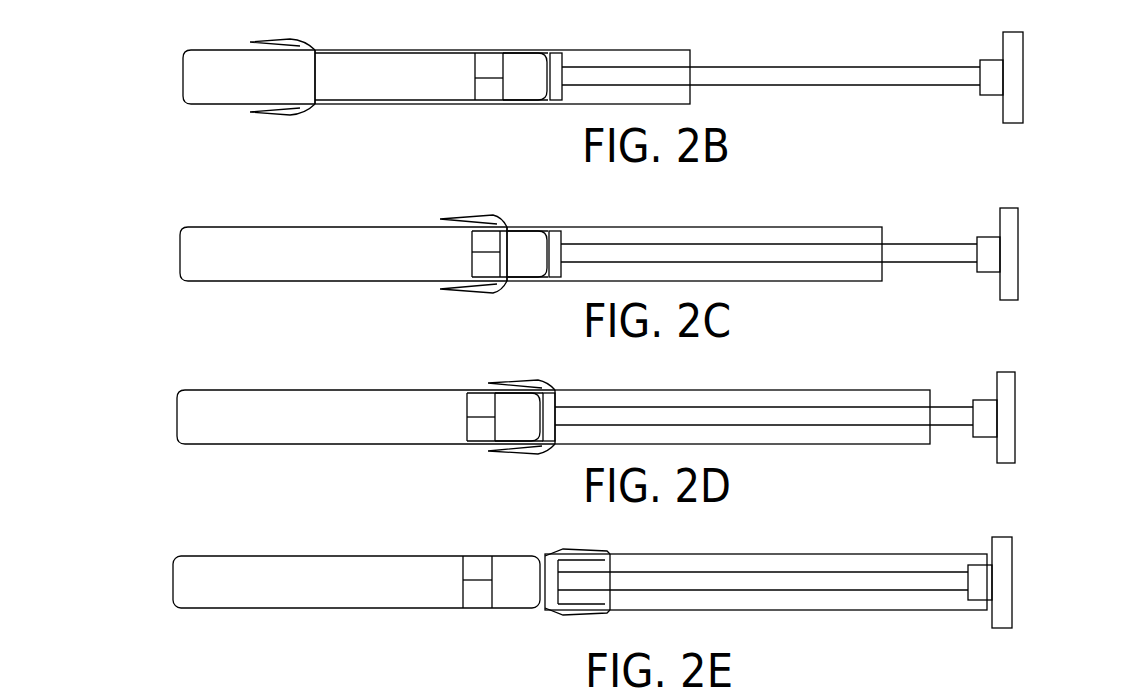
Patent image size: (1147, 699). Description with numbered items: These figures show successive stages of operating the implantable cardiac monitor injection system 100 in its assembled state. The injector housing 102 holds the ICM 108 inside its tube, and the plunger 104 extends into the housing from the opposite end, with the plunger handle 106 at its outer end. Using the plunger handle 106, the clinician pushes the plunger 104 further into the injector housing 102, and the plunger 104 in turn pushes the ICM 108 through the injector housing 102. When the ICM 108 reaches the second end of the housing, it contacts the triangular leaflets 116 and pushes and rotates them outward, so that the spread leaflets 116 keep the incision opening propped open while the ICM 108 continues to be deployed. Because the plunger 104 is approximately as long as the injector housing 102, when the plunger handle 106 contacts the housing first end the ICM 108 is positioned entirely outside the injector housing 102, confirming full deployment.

In FIG. 2B, the injection system 100 is at (647, 75).
In FIG. 2C, the injection system 100 is at (644, 249).
In FIG. 2D, the injection system 100 is at (641, 413).
In FIG. 2E, the injection system 100 is at (637, 578).
In FIG. 2B, the injector housing 102 is at (580, 50).
In FIG. 2C, the injector housing 102 is at (575, 228).
In FIG. 2D, the injector housing 102 is at (570, 390).
In FIG. 2E, the injector housing 102 is at (565, 552).
In FIG. 2B, the plunger 104 is at (790, 78).
In FIG. 2C, the plunger 104 is at (832, 250).
In FIG. 2D, the plunger 104 is at (827, 418).
In FIG. 2E, the plunger 104 is at (820, 585).
In FIG. 2B, the plunger handle 106 is at (1013, 68).
In FIG. 2C, the plunger handle 106 is at (1010, 242).
In FIG. 2D, the plunger handle 106 is at (1005, 408).
In FIG. 2E, the plunger handle 106 is at (1003, 570).
In FIG. 2B, the ICM 108 is at (375, 82).
In FIG. 2C, the ICM 108 is at (370, 257).
In FIG. 2D, the ICM 108 is at (368, 423).
In FIG. 2E, the ICM 108 is at (365, 588).
In FIG. 2B, the leaflets 116 is at (290, 43).